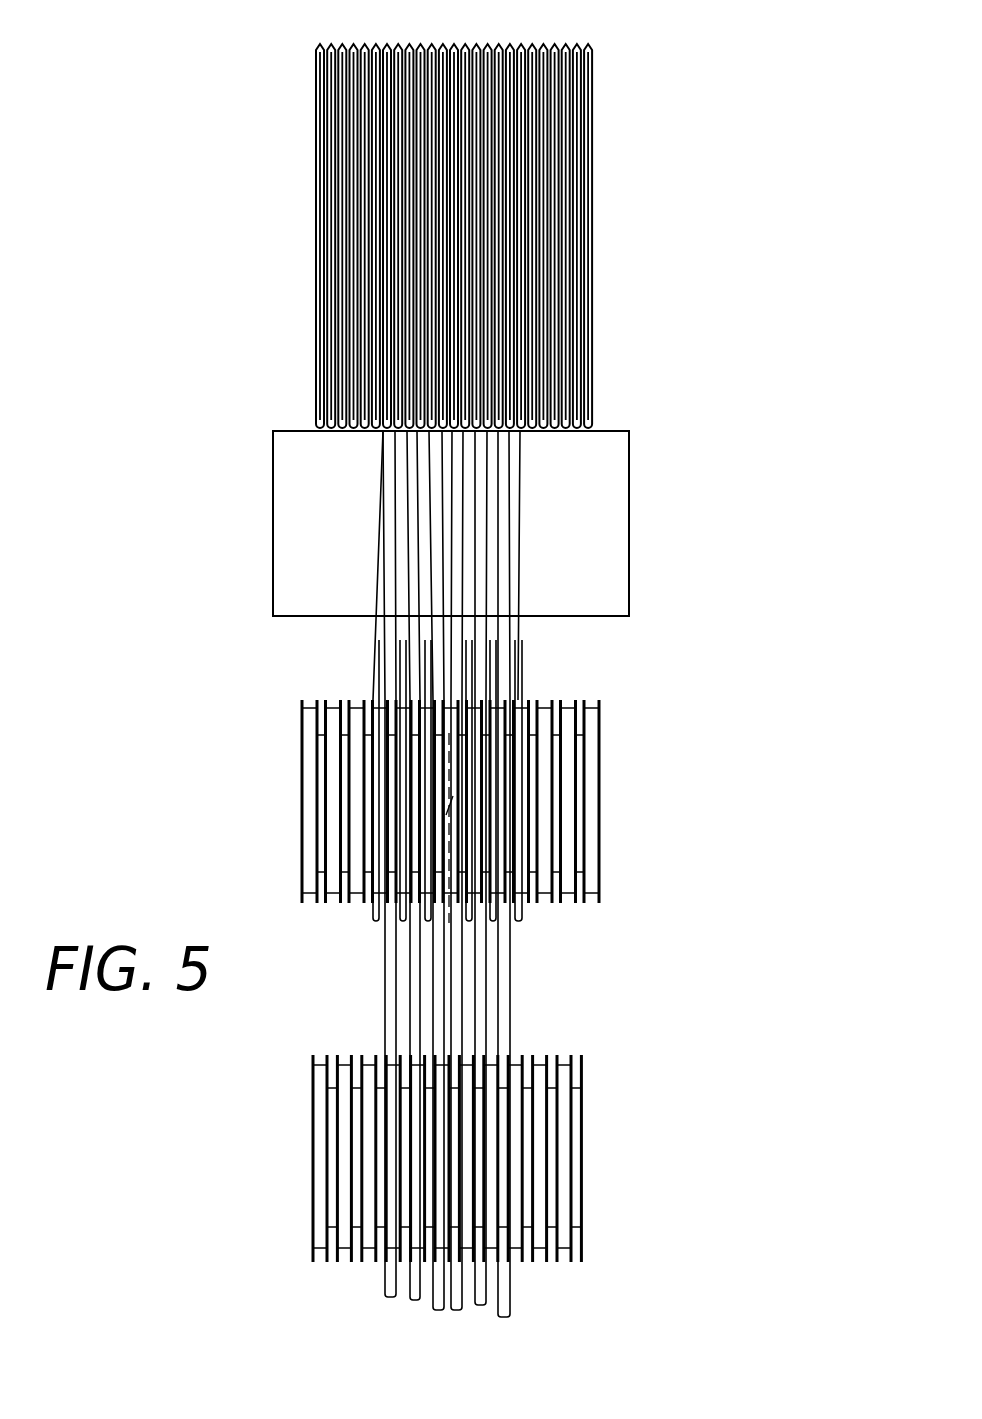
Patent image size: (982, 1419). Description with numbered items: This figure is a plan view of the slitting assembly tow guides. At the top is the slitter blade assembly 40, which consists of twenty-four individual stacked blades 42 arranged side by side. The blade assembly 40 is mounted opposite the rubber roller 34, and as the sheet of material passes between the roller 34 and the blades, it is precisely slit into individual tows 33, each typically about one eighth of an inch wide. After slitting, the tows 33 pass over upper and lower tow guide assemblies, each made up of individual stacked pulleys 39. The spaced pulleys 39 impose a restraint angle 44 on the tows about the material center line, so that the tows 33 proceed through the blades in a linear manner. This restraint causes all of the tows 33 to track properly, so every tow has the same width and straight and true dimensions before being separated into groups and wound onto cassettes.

The slitter blade assembly 40 is at (455, 216).
The stacked blades 42 is at (594, 52).
The rubber roller 34 is at (604, 533).
The tows 33 is at (516, 658).
The stacked pulleys 39 is at (587, 750).
The restraint angle 44 is at (447, 998).